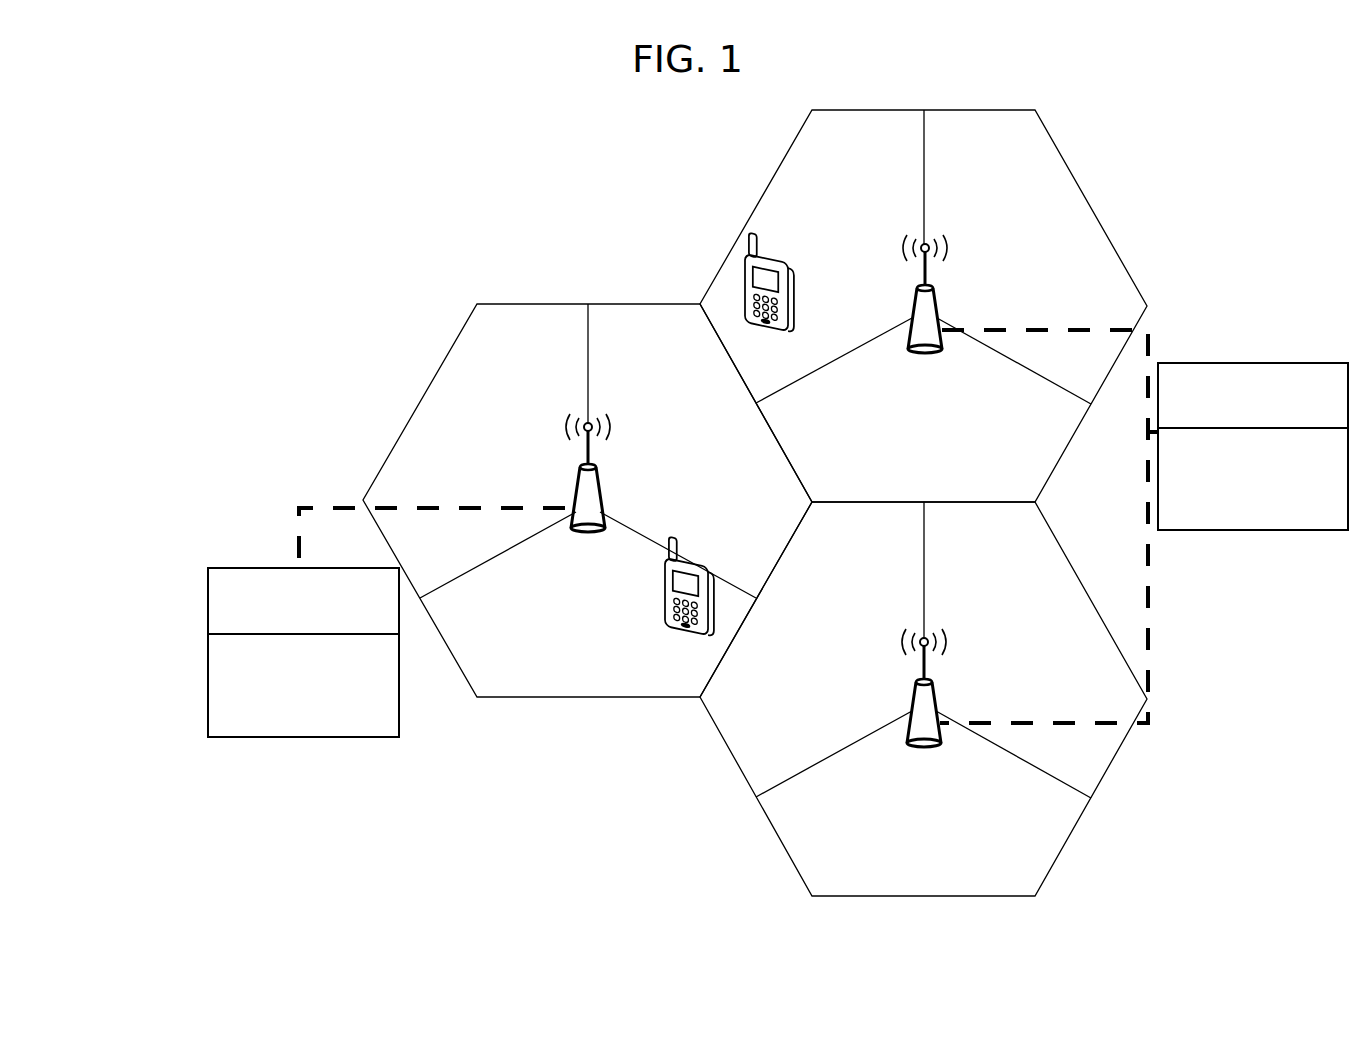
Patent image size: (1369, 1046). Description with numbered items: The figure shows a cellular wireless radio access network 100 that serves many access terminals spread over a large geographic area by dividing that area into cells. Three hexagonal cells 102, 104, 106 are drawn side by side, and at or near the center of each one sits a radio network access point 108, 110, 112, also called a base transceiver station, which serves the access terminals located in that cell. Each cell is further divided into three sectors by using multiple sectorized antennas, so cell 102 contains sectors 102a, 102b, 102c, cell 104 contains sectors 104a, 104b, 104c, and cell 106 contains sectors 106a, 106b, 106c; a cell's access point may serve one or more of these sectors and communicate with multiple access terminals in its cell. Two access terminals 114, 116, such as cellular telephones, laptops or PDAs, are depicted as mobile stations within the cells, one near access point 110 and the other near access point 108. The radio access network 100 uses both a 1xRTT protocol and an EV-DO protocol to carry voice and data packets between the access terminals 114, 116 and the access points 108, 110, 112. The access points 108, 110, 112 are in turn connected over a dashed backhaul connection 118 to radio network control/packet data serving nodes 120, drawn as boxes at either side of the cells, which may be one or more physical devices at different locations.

The radio access network 100 is at (522, 188).
The cell 102 is at (420, 378).
The sector 102a is at (512, 460).
The sector 102b is at (700, 460).
The sector 102c is at (616, 672).
The cell 104 is at (1078, 172).
The sector 104a is at (874, 253).
The sector 104b is at (1059, 270).
The sector 104c is at (969, 443).
The cell 106 is at (726, 800).
The sector 106a is at (867, 630).
The sector 106b is at (1051, 661).
The sector 106c is at (953, 858).
The radio network access point 108 is at (572, 524).
The radio network access point 110 is at (905, 348).
The radio network access point 112 is at (912, 745).
The access terminal 114 is at (790, 327).
The access terminal 116 is at (666, 628).
The backhaul connection 118 is at (300, 527).
The radio network control/packet data serving node 120 is at (778, 550).